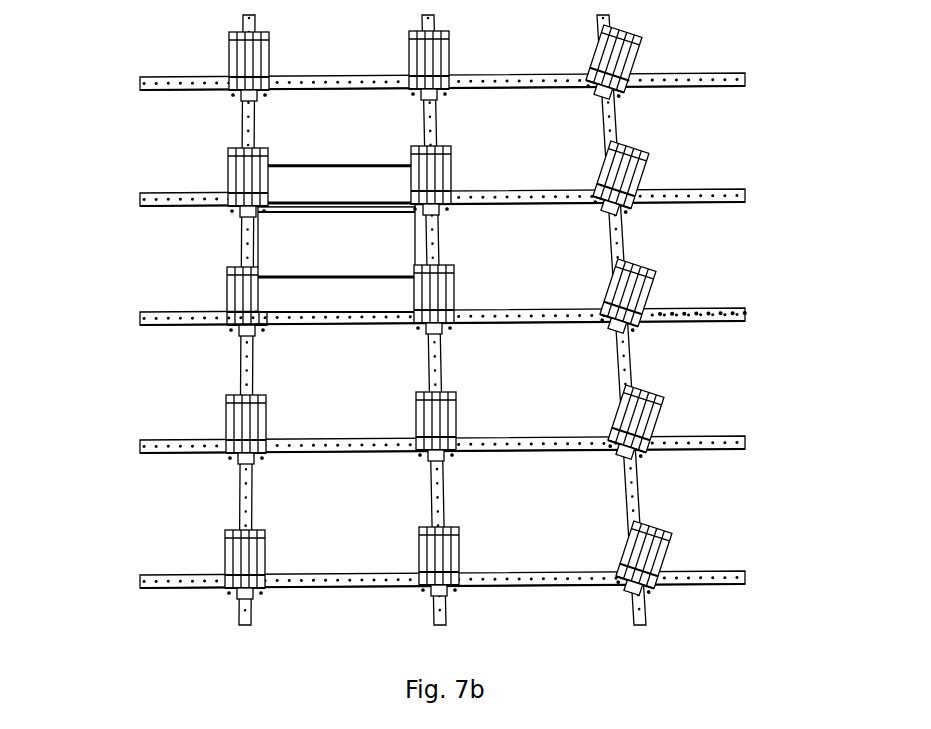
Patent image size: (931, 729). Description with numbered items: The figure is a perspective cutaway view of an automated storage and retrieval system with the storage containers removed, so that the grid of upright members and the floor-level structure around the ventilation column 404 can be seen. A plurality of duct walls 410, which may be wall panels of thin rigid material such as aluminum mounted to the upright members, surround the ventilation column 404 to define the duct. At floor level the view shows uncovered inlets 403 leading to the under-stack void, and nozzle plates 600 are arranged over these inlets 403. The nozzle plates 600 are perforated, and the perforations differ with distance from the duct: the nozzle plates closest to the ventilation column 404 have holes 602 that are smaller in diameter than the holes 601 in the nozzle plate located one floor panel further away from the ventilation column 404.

The inlet 403 is at (238, 501).
The ventilation column 404 is at (336, 259).
The duct wall 410 is at (277, 181).
The nozzle plate 600 is at (220, 339).
The hole 601 is at (727, 304).
The hole 602 is at (572, 311).